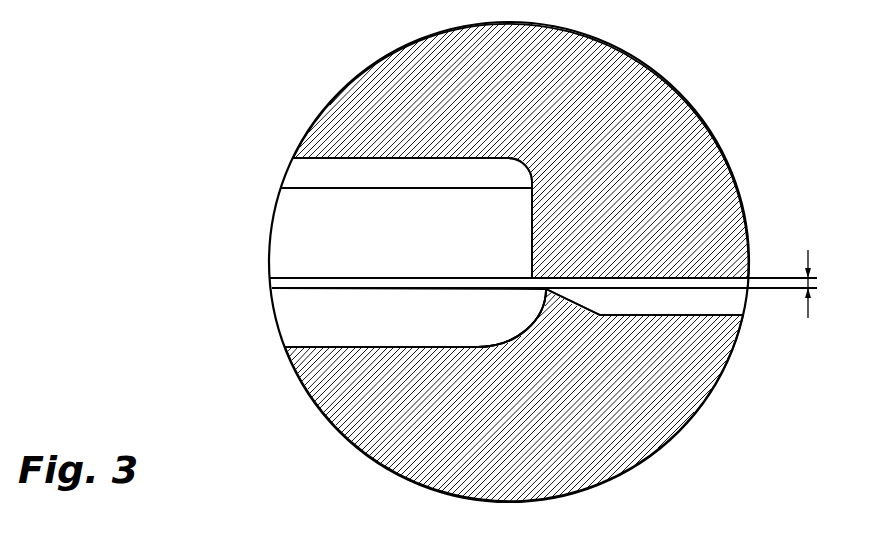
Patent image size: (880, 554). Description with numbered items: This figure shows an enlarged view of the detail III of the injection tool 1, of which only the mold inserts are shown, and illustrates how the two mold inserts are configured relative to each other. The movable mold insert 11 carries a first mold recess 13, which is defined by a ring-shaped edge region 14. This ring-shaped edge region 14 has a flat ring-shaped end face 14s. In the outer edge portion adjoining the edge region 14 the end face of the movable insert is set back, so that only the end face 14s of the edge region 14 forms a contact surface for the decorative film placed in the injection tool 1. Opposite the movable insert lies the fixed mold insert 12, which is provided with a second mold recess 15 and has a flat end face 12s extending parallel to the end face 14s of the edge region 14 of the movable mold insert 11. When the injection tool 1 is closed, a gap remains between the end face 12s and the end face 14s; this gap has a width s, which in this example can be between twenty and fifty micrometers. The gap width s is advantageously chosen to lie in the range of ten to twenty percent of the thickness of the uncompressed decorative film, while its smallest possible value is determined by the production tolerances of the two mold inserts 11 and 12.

The injection tool 1 is at (727, 58).
The movable mold insert 11 is at (340, 422).
The fixed mold insert 12 is at (355, 82).
The flat end face 12s is at (720, 280).
The first mold recess 13 is at (295, 330).
The ring-shaped edge region 14 is at (545, 296).
The flat ring-shaped end face 14s is at (548, 284).
The second mold recess 15 is at (293, 224).
The gap width s is at (797, 283).
The detail III is at (575, 31).